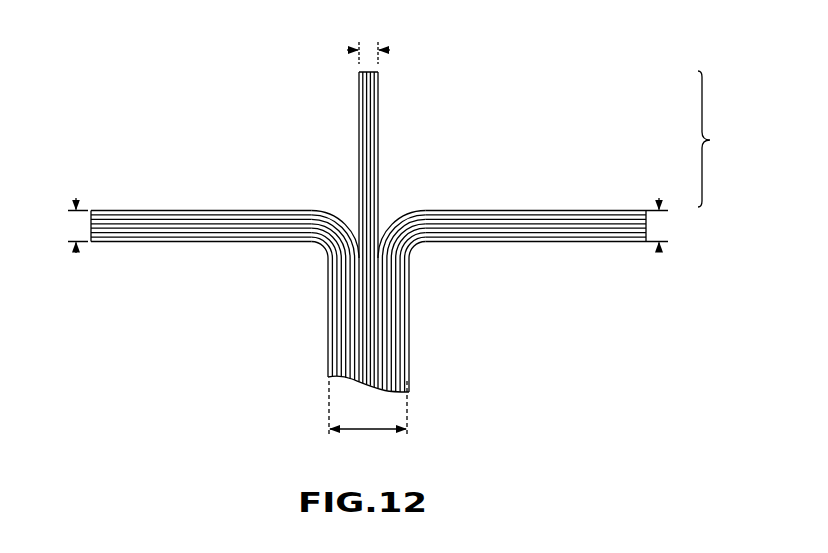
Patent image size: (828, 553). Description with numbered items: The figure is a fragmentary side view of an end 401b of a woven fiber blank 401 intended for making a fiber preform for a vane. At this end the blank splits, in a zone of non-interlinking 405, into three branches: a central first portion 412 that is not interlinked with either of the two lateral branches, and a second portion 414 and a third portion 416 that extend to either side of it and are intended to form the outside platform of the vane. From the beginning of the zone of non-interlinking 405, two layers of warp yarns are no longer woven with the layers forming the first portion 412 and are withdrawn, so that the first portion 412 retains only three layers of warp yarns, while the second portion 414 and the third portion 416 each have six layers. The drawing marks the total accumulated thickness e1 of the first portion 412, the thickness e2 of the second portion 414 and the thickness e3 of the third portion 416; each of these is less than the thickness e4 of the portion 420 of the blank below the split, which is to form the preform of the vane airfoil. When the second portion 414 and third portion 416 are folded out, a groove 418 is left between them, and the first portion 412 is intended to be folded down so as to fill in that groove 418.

The fiber blank 401 is at (434, 373).
The end of the fiber blank 401b is at (331, 165).
The zone of non-interlinking 405 is at (724, 139).
The first portion 412 is at (373, 99).
The second portion 414 is at (186, 210).
The third portion 416 is at (557, 210).
The groove 418 is at (389, 213).
The portion of the blank forming the airfoil preform 420 is at (338, 352).
The thickness of the first portion e1 is at (367, 50).
The thickness of the second portion e2 is at (76, 252).
The thickness of the third portion e3 is at (659, 251).
The thickness of the airfoil portion e4 is at (368, 409).